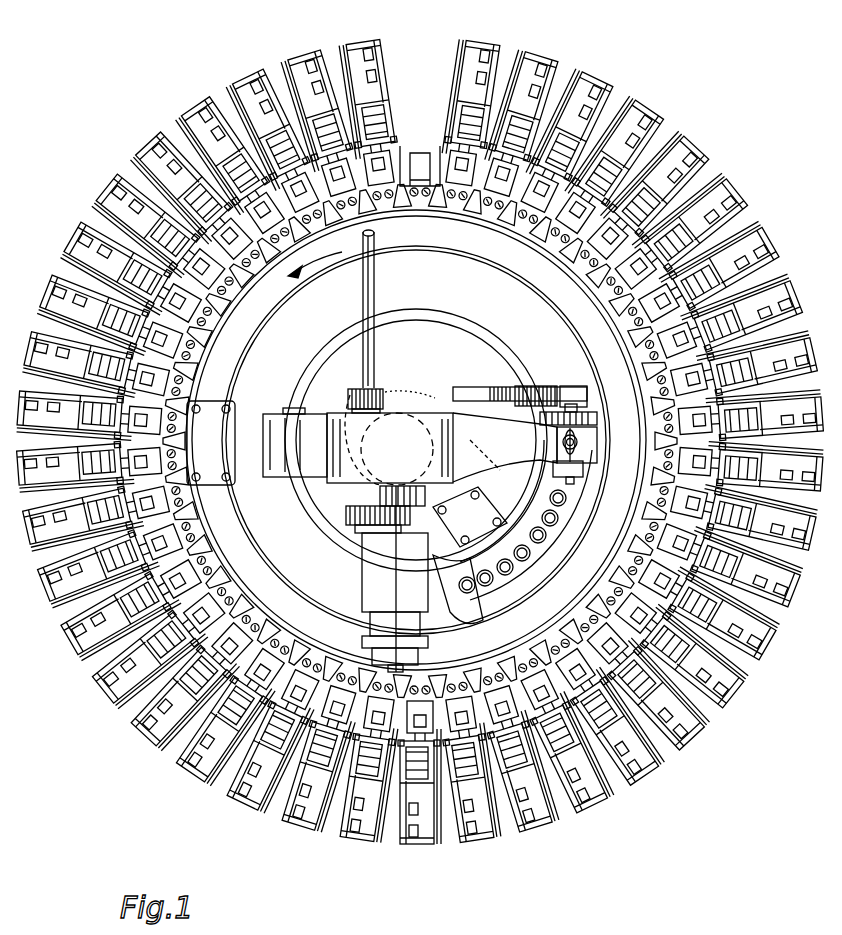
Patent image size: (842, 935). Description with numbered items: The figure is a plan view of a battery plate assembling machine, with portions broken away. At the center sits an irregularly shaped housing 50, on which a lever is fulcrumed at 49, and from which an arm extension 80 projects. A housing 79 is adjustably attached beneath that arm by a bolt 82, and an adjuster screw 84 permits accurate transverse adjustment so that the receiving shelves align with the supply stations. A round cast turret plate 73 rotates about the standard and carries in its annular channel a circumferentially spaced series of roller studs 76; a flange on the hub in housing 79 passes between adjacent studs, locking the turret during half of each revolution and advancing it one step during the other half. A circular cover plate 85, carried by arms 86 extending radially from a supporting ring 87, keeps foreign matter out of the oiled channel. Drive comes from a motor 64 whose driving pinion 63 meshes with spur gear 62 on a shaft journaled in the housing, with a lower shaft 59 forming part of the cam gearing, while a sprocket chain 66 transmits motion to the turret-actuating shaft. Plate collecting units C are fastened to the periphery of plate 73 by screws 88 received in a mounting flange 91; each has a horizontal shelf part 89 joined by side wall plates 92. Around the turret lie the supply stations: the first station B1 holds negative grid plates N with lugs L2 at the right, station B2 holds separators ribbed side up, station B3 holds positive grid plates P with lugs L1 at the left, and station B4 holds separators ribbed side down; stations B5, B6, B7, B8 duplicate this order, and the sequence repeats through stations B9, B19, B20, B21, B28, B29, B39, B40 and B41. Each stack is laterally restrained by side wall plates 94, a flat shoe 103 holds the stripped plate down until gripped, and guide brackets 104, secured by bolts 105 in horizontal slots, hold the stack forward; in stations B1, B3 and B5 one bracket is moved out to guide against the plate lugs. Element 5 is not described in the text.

The first station B1 is at (387, 32).
The second station B2 is at (317, 46).
The station B3 is at (270, 64).
The station B4 is at (200, 96).
The station B5 is at (144, 142).
The station B6 is at (100, 180).
The station B7 is at (66, 236).
The station B8 is at (46, 290).
The station B9 is at (44, 346).
The station B19 is at (290, 824).
The station B20 is at (356, 832).
The station B21 is at (424, 834).
The station B28 is at (770, 652).
The station B29 is at (788, 604).
The station B39 is at (616, 84).
The station B40 is at (574, 48).
The station B41 is at (512, 38).
The guide brackets 104 is at (380, 56).
The bolts 105 is at (380, 66).
The lugs L1 is at (242, 116).
The lugs L2 is at (380, 78).
The negative grid plates N is at (375, 100).
The positive grid plates P is at (272, 116).
The carrier 5 is at (192, 148).
The fulcrum 49 is at (293, 408).
The housing 50 is at (446, 404).
The lower shaft 59 is at (376, 304).
The spur gear 62 is at (352, 520).
The driving pinion 63 is at (430, 518).
The motor 64 is at (378, 580).
The sprocket chain 66 is at (536, 388).
The turret plate 73 is at (568, 530).
The roller studs 76 is at (540, 545).
The housing 79 is at (598, 430).
The arm extension 80 is at (498, 452).
The bolt 82 is at (578, 445).
The adjuster screw 84 is at (584, 482).
The cover plate 85 is at (478, 616).
The arms 86 is at (382, 390).
The supporting ring 87 is at (418, 420).
The screws 88 is at (212, 536).
The shelf part 89 is at (564, 650).
The mounting flange 91 is at (640, 566).
The side wall plates 92 is at (645, 330).
The side wall plates 94 is at (700, 700).
The flat shoe 103 is at (508, 756).
The plate collecting shelves C is at (272, 598).